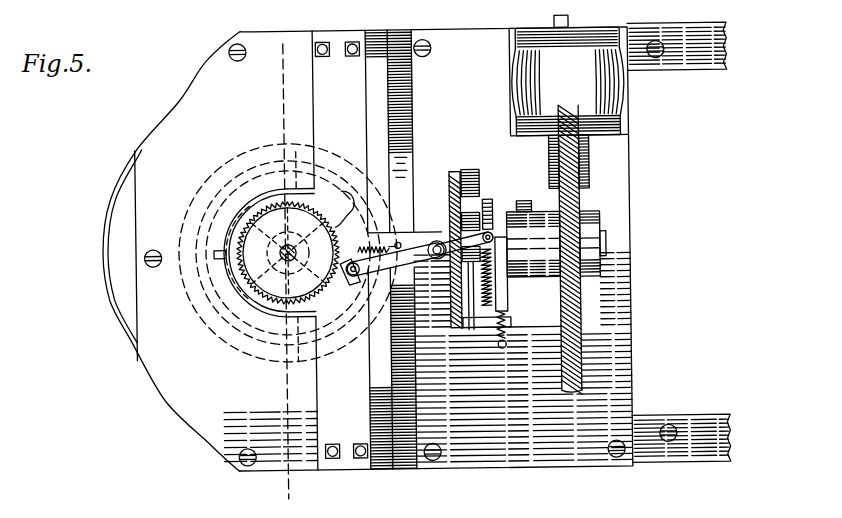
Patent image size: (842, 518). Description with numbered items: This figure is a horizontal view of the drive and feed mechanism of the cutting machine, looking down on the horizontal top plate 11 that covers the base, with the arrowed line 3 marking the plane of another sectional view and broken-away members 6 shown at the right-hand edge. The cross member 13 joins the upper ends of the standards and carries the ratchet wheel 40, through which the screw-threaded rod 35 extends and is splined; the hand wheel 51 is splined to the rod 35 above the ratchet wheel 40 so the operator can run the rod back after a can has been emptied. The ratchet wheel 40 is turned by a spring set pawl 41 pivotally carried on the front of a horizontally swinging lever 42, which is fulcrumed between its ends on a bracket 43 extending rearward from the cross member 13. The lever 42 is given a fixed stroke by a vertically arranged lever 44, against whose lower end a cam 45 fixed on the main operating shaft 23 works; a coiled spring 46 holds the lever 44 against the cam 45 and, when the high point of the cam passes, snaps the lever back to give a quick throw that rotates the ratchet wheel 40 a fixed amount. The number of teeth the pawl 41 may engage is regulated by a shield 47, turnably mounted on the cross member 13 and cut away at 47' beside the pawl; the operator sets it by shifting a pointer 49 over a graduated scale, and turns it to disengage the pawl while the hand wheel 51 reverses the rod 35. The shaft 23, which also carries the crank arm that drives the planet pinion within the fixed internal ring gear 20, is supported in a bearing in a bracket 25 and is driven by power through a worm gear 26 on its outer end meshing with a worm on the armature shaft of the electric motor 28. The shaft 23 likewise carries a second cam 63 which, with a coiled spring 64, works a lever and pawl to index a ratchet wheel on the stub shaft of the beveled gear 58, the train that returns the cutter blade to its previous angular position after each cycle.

The section line 3- 3 is at (249, 56).
The guide rail 6 is at (647, 64).
The top plate 11 is at (157, 140).
The cross member 13 is at (325, 110).
The internal ring gear 20 is at (405, 110).
The main operating shaft 23 is at (606, 245).
The bracket 25 is at (533, 207).
The worm gear 26 is at (574, 148).
The electric motor 28 is at (569, 75).
The screw-threaded rod 35 is at (296, 229).
The ratchet wheel 40 is at (252, 230).
The spring set pawl 41 is at (348, 283).
The horizontally swinging lever 42 is at (418, 260).
The bracket 43 is at (421, 236).
The vertically arranged lever 44 is at (491, 230).
The cam 45 is at (475, 197).
The coiled spring 46 is at (476, 318).
The shield 47 is at (202, 246).
The cut-away portion of shield 47' is at (344, 203).
The pointer 49 is at (218, 252).
The hand wheel 51 is at (253, 148).
The beveled gear 58 is at (460, 182).
The cam 63 is at (504, 287).
The coiled spring 64 is at (507, 335).